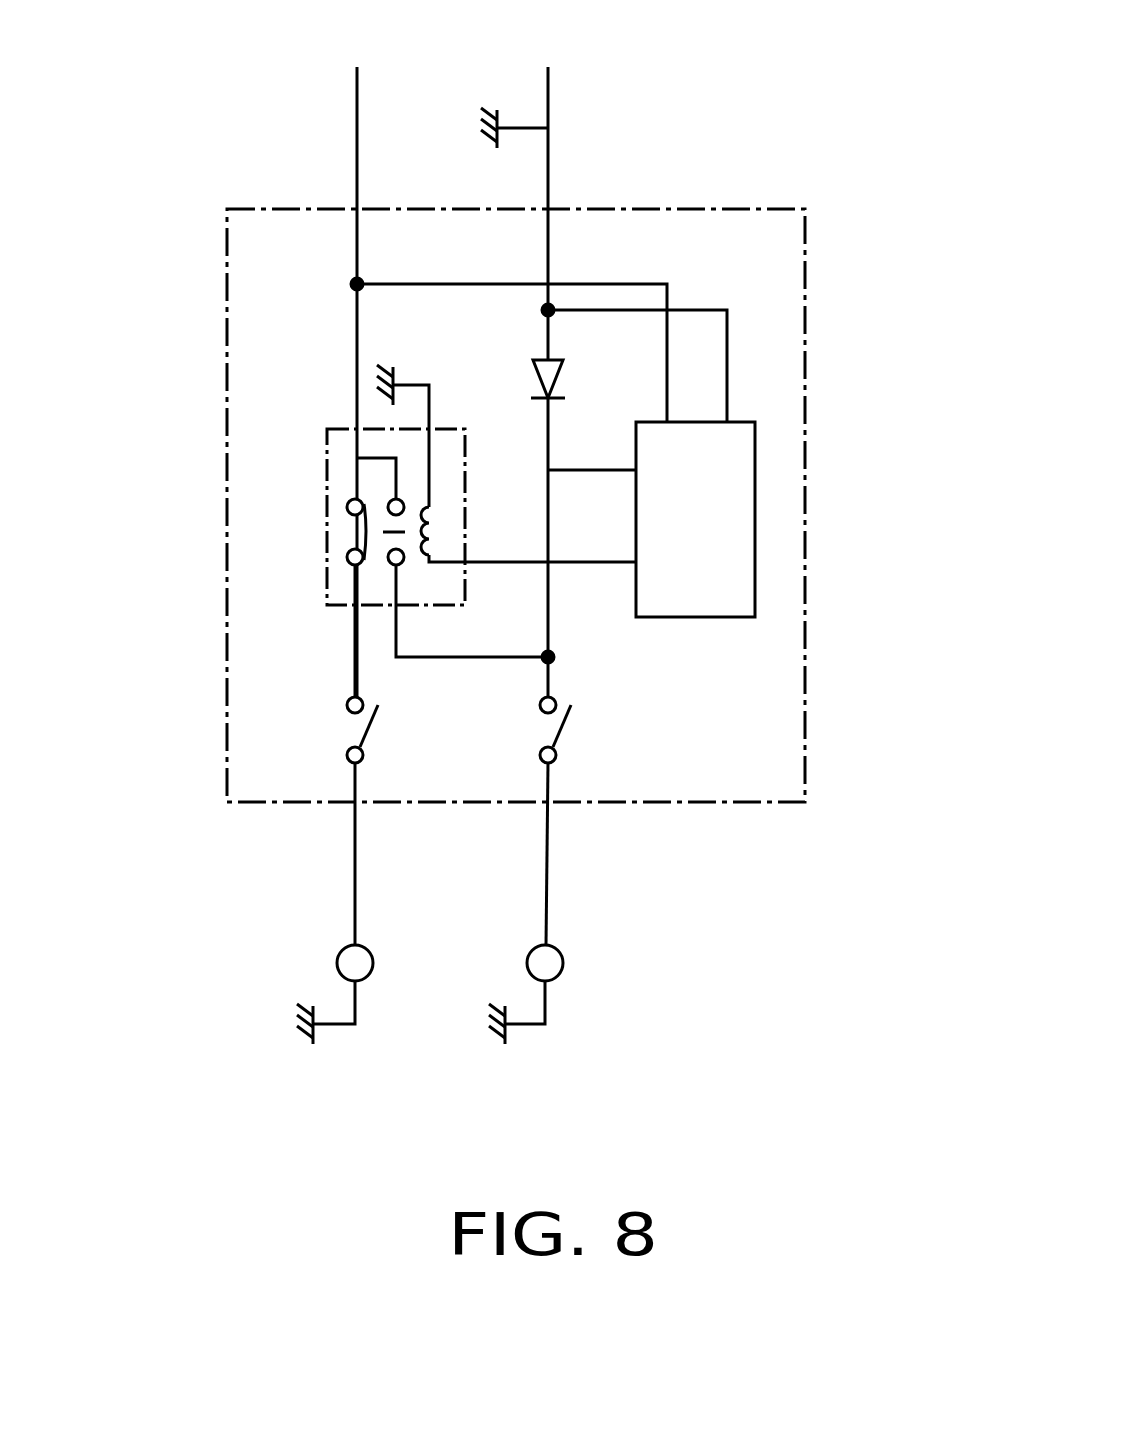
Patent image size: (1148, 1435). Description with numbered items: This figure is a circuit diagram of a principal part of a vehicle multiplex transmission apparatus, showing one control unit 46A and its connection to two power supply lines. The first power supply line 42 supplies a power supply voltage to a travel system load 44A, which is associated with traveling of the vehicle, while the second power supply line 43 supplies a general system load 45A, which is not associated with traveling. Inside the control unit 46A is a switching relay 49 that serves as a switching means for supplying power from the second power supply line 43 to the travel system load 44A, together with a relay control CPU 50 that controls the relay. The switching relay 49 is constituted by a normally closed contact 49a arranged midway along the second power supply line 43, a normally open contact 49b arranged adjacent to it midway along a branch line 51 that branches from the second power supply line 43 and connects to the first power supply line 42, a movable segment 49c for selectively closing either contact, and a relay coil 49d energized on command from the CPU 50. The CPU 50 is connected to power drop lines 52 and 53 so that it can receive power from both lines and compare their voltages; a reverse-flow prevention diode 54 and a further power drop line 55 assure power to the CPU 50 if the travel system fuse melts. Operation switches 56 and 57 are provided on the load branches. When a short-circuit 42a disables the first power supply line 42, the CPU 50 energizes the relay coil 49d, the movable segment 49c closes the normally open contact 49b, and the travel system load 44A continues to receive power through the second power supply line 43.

The first power supply line 42 is at (548, 128).
The short-circuit 42a is at (494, 118).
The second power supply line 43 is at (357, 125).
The travel system load 44A is at (565, 972).
The general system load 45A is at (366, 978).
The control unit 46A is at (633, 207).
The switching relay 49 is at (312, 615).
The normally closed contact 49a is at (346, 512).
The normally open contact 49b is at (407, 562).
The movable segment 49c is at (358, 532).
The relay coil 49d is at (437, 530).
The relay control CPU 50 is at (713, 620).
The branch line 51 is at (450, 660).
The power drop line 52 is at (727, 380).
The power drop line 53 is at (667, 293).
The reverse-flow prevention diode 54 is at (535, 375).
The power drop line 55 is at (582, 466).
The operation switch 56 is at (567, 727).
The operation switch 57 is at (374, 727).